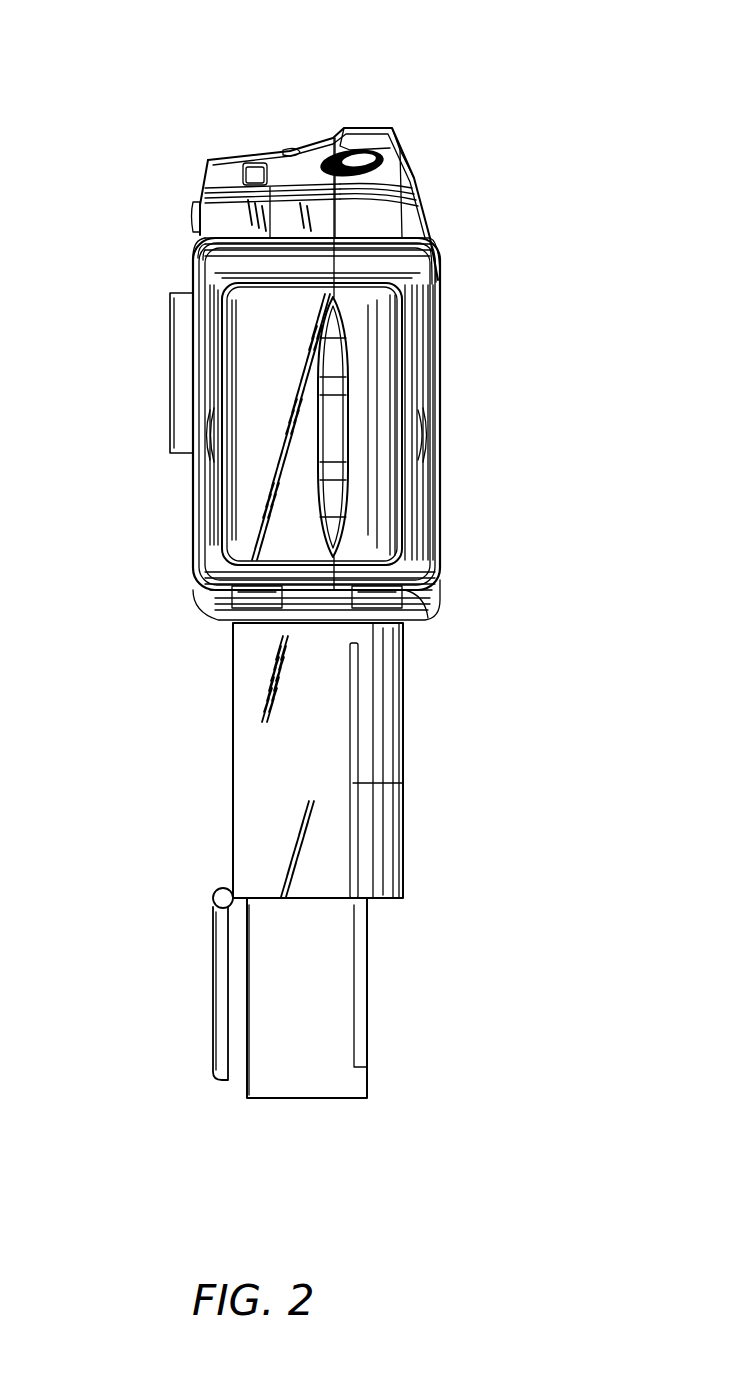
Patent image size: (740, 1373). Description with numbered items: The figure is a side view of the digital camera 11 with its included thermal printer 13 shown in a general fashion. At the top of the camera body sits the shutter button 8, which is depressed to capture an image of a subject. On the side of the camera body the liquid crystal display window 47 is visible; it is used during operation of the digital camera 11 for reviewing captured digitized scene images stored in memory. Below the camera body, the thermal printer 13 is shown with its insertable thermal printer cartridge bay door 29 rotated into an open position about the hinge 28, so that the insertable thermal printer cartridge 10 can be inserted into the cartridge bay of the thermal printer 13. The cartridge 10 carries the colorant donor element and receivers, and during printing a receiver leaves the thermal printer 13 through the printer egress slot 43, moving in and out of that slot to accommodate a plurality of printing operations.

The shutter button 8 is at (358, 160).
The digital camera 11 is at (470, 147).
The liquid crystal display (LCD) window 47 is at (170, 385).
The thermal printer 13 is at (440, 740).
The printer egress slot 43 is at (403, 783).
The insertable thermal printer cartridge 10 is at (388, 1018).
The hinge 28 is at (212, 906).
The insertable thermal printer cartridge bay door 29 is at (213, 1025).